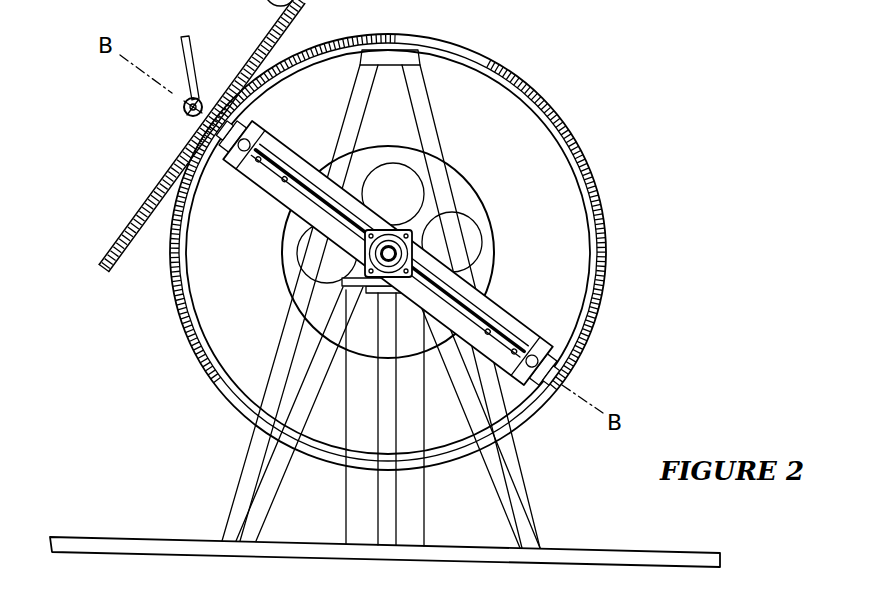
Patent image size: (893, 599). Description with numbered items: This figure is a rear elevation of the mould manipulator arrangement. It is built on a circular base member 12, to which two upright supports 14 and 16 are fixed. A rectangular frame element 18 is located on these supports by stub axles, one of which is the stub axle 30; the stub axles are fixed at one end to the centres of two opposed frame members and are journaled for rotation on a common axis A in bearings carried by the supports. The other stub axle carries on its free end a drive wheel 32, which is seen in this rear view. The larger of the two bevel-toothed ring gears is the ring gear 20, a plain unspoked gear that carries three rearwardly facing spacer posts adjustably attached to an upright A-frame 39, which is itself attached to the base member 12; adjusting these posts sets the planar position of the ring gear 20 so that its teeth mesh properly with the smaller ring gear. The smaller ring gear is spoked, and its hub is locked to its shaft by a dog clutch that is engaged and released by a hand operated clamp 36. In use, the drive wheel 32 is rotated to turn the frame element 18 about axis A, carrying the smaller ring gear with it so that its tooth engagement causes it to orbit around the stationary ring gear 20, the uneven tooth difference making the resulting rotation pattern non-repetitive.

The circular base member 12 is at (136, 526).
The upright support 14 is at (258, 497).
The upright support 16 is at (413, 515).
The frame element 18 is at (255, 205).
The bevel-toothed ring gear 20 is at (467, 58).
The stub axle 30 is at (392, 254).
The drive wheel 32 is at (471, 183).
The hand operated clamp 36 is at (210, 70).
The A-frame 39 is at (282, 360).